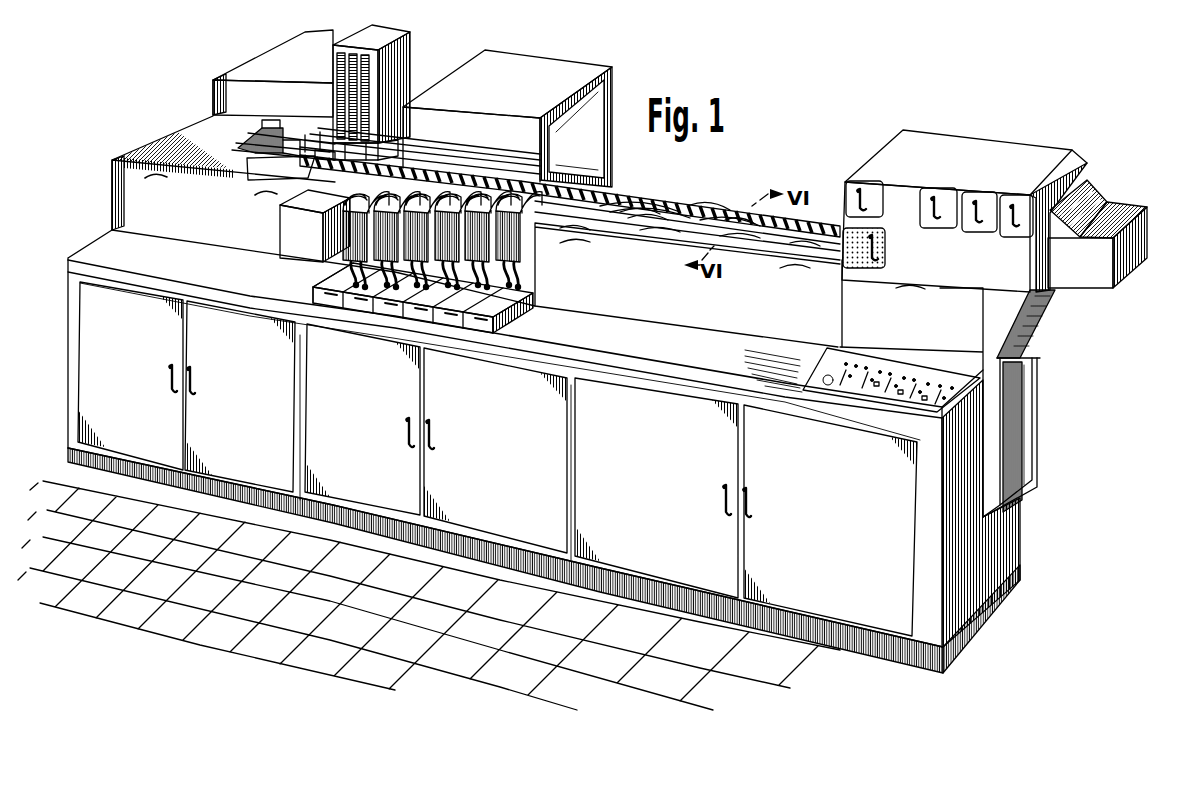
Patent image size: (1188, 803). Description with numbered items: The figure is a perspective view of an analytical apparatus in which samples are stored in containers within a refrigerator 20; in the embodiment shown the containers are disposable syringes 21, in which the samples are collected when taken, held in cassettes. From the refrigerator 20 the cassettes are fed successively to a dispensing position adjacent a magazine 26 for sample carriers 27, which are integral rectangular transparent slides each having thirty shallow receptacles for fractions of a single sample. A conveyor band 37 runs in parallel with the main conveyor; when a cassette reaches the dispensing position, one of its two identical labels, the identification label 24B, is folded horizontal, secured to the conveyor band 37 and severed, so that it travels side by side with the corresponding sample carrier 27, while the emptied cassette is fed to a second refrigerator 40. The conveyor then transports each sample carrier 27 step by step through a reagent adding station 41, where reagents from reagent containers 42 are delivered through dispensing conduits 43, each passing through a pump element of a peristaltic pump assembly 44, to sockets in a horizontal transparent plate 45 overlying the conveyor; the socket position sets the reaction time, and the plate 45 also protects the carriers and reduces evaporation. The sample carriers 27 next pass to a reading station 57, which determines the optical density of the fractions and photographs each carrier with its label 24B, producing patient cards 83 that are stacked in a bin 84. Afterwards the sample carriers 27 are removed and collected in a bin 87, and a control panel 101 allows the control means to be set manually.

The refrigerator 20 is at (250, 68).
The syringe 21 is at (283, 124).
The magazine 26 is at (388, 33).
The sample carrier 27 is at (290, 196).
The refrigerator 40 is at (583, 72).
The reagent adding station 41 is at (485, 160).
The identification label 24B is at (622, 212).
The conveyor band 37 is at (706, 202).
The plate 45 is at (737, 218).
The dispensing conduit 43 is at (648, 200).
The peristaltic pump assembly 44 is at (547, 257).
The reagent container 42 is at (516, 320).
The reading station 57 is at (890, 196).
The patient card 83 is at (1092, 188).
The bin 84 is at (1120, 263).
The control panel 101 is at (837, 349).
The bin 87 is at (988, 493).